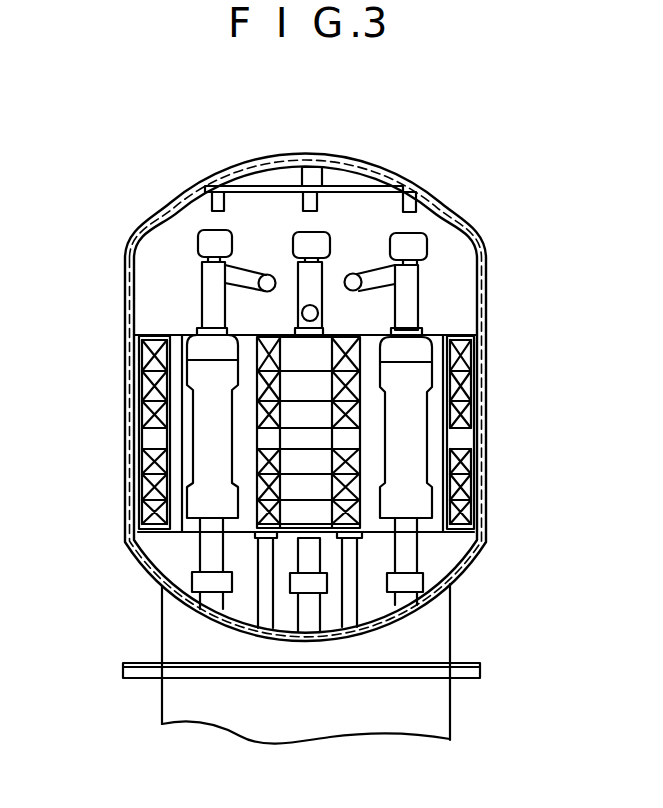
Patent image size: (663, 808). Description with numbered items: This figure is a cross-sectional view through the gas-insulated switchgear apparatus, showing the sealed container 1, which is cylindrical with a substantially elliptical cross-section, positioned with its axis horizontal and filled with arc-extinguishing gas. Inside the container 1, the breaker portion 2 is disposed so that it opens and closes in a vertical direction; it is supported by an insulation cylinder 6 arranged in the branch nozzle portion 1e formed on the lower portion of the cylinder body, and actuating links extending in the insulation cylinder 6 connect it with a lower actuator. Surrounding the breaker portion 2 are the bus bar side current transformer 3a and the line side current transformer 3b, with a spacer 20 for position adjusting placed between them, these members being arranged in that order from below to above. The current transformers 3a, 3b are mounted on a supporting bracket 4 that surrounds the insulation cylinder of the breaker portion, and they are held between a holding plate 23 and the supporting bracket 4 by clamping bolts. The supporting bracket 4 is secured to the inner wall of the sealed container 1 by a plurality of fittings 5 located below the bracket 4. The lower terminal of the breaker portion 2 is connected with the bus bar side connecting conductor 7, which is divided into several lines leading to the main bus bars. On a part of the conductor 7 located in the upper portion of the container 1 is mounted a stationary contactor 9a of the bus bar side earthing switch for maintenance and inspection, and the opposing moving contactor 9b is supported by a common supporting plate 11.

The sealed container 1 is at (126, 245).
The branch nozzle portion 1e is at (160, 627).
The breaker portion 2 is at (210, 433).
The bus bar side current transformer 3a is at (466, 462).
The line side current transformer 3b is at (466, 416).
The supporting bracket 4 is at (450, 536).
The fittings 5 is at (337, 563).
The insulation cylinder 6 is at (310, 610).
The bus bar side connecting conductor 7 is at (419, 297).
The stationary contactor of bus bar side earthing switch 9a is at (428, 243).
The moving contactor of bus bar side earthing switch 9b is at (421, 208).
The common supporting plate 11 is at (360, 186).
The spacer 20 is at (466, 437).
The holding plate 23 is at (156, 337).